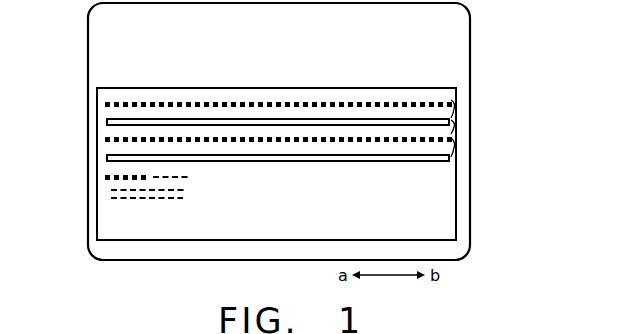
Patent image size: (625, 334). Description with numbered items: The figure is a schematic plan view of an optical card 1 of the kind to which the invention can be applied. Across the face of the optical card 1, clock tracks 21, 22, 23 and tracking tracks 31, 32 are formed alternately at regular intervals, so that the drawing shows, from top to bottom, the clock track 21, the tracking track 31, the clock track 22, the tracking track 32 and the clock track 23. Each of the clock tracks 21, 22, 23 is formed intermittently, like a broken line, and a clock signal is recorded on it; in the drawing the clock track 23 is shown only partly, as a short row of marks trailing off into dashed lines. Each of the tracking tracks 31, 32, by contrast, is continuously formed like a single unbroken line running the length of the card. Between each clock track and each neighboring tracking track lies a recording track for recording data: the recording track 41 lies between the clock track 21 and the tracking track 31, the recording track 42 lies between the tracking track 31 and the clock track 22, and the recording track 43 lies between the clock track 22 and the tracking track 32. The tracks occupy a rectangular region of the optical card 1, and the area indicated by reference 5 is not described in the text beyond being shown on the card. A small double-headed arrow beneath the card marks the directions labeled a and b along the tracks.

The optical card 1 is at (458, 46).
The recording area 5 is at (447, 203).
The clock track 21 is at (107, 104).
The clock track 22 is at (107, 140).
The clock track 23 is at (107, 177).
The tracking track 31 is at (107, 122).
The tracking track 32 is at (107, 159).
The recording track 41 is at (455, 110).
The recording track 42 is at (455, 127).
The recording track 43 is at (455, 148).